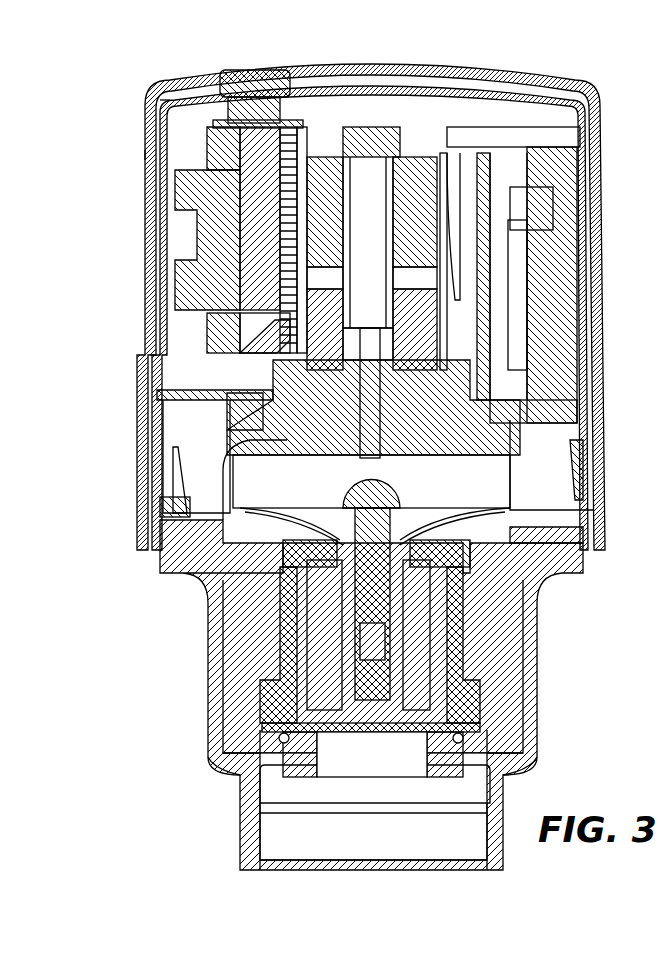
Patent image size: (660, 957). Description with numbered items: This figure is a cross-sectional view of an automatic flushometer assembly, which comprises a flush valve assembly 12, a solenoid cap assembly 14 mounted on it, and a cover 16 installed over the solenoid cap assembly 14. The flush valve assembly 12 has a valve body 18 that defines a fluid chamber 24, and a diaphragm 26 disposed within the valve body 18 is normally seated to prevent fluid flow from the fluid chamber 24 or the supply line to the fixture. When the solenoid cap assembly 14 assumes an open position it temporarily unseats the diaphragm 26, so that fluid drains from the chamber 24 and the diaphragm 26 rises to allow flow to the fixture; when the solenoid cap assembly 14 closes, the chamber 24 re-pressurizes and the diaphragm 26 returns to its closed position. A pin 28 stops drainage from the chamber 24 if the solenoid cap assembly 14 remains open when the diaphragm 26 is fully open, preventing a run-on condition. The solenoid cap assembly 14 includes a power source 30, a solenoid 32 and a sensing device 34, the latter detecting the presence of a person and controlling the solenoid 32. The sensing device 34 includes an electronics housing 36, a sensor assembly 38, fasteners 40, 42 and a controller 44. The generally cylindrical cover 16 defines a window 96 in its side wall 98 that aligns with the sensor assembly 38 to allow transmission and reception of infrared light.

The flush valve assembly 12 is at (190, 775).
The solenoid cap assembly 14 is at (185, 135).
The cover 16 is at (594, 248).
The valve body 18 is at (205, 570).
The fluid chamber 24 is at (475, 490).
The diaphragm 26 is at (470, 535).
The pin 28 is at (368, 578).
The power source 30 is at (540, 330).
The solenoid 32 is at (410, 236).
The sensing device 34 is at (215, 240).
The electronics housing 36 is at (262, 190).
The sensor assembly 38 is at (190, 285).
The fastener 40 is at (275, 325).
The fastener 42 is at (266, 145).
The controller 44 is at (292, 228).
The window 96 is at (150, 152).
The side wall 98 is at (158, 270).